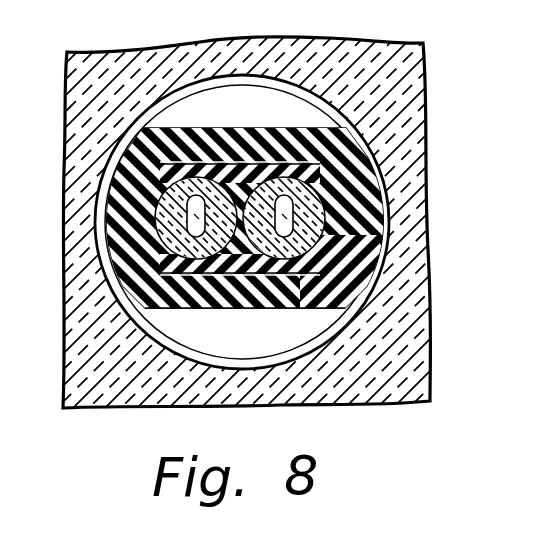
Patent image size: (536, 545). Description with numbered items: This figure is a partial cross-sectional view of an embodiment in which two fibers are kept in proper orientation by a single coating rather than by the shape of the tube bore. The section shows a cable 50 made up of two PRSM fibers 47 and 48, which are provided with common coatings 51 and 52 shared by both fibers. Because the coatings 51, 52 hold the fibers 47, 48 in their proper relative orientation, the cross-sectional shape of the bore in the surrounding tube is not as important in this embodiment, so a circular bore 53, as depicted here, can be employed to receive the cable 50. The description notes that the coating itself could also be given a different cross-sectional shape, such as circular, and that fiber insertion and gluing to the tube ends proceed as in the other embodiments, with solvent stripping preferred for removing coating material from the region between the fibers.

The PRSM fiber 47 is at (160, 187).
The PRSM fiber 48 is at (326, 249).
The cable 50 is at (395, 178).
The common coating 51 is at (198, 130).
The common coating 52 is at (275, 308).
The circular bore 53 is at (314, 98).